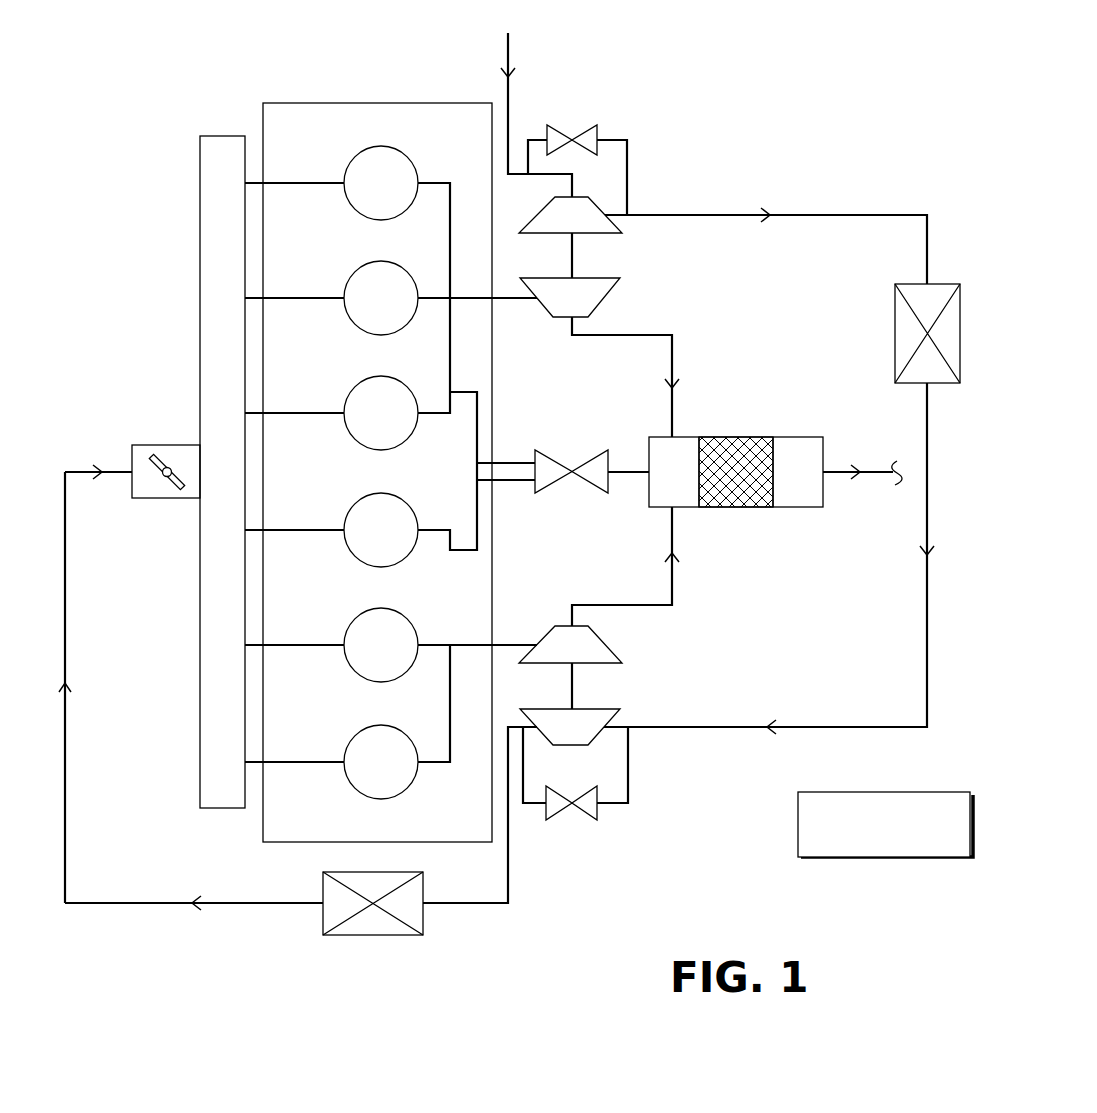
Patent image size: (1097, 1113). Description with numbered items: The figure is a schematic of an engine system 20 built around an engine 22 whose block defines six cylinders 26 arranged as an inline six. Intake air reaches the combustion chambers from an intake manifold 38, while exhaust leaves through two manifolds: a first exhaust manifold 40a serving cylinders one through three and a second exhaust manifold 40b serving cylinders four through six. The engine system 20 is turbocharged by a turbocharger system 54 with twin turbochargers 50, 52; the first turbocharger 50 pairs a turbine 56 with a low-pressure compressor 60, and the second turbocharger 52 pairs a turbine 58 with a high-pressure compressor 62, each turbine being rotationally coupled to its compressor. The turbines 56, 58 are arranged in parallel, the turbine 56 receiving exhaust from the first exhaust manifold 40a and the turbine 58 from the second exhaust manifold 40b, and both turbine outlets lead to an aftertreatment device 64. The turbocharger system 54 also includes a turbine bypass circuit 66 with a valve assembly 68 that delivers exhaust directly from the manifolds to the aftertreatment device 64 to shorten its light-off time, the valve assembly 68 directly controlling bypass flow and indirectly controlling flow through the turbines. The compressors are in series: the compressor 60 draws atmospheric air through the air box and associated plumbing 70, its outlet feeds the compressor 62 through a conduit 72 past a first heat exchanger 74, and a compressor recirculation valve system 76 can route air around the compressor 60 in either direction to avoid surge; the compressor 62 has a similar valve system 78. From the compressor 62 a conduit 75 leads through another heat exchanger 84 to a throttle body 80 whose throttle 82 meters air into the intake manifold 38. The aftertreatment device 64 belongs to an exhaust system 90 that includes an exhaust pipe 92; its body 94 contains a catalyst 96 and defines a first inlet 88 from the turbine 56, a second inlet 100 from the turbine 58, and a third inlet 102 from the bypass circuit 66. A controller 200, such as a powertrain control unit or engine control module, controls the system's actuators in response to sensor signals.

The engine system 20 is at (739, 66).
The engine 22 is at (400, 103).
The cylinders 26 is at (380, 146).
The intake manifold 38 is at (200, 255).
The first exhaust manifold 40a is at (425, 183).
The second exhaust manifold 40b is at (425, 763).
The first turbocharger 50 is at (614, 275).
The second turbocharger 52 is at (620, 675).
The turbocharger system 54 is at (731, 186).
The turbine 56 is at (545, 313).
The turbine 58 is at (550, 628).
The compressor 60 is at (600, 207).
The compressor 62 is at (600, 737).
The aftertreatment device 64 is at (806, 437).
The turbine bypass circuit 66 is at (582, 458).
The valve assembly 68 is at (557, 486).
The air box and associated plumbing 70 is at (508, 100).
The conduit 72 is at (830, 215).
The first heat exchanger 74 is at (895, 330).
The conduit 75 is at (455, 903).
The compressor recirculation valve system 76 is at (612, 104).
The valve system 78 is at (576, 826).
The throttle body 80 is at (140, 445).
The throttle 82 is at (170, 455).
The heat exchanger 84 is at (373, 935).
The first inlet 88 is at (674, 433).
The exhaust system 90 is at (737, 497).
The exhaust pipe 92 is at (838, 470).
The body 94 is at (690, 508).
The catalyst 96 is at (736, 448).
The second inlet 100 is at (670, 509).
The third inlet 102 is at (648, 465).
The controller 200 is at (858, 792).